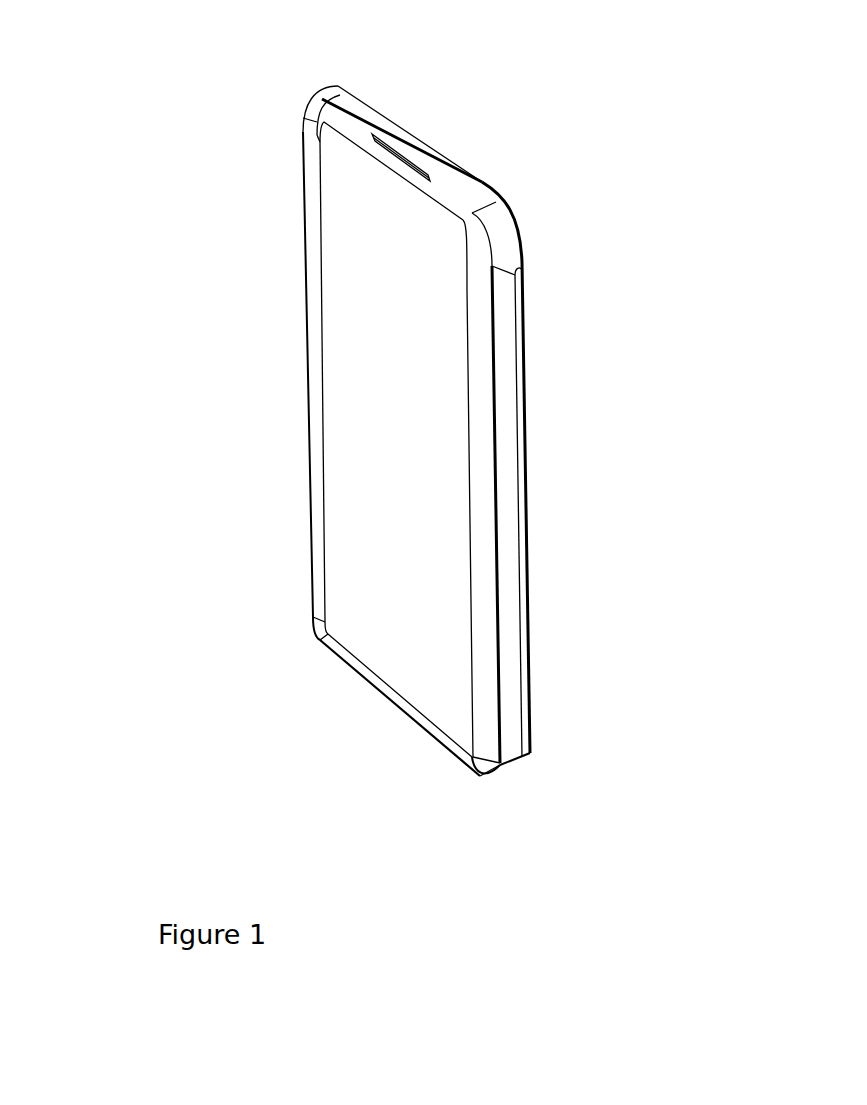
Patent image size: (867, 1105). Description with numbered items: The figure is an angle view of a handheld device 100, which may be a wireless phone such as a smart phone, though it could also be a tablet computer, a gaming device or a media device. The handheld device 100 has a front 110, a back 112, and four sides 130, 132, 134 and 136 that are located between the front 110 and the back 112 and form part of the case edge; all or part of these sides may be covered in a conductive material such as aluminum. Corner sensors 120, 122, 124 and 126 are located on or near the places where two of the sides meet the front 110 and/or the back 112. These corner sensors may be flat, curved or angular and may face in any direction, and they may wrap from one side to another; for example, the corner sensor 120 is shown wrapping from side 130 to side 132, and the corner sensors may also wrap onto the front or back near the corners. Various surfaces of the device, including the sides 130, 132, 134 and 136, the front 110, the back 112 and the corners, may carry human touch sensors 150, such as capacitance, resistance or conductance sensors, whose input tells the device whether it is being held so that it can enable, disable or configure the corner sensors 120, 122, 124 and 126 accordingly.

The handheld device 100 is at (178, 135).
The front 110 is at (348, 355).
The back 112 is at (556, 345).
The corner sensor 120 is at (503, 227).
The corner sensor 122 is at (333, 90).
The corner sensor 124 is at (312, 650).
The corner sensor 126 is at (515, 779).
The side 130 is at (420, 150).
The side 132 is at (516, 475).
The side 134 is at (398, 722).
The side 136 is at (306, 484).
The sensors 150 is at (513, 538).